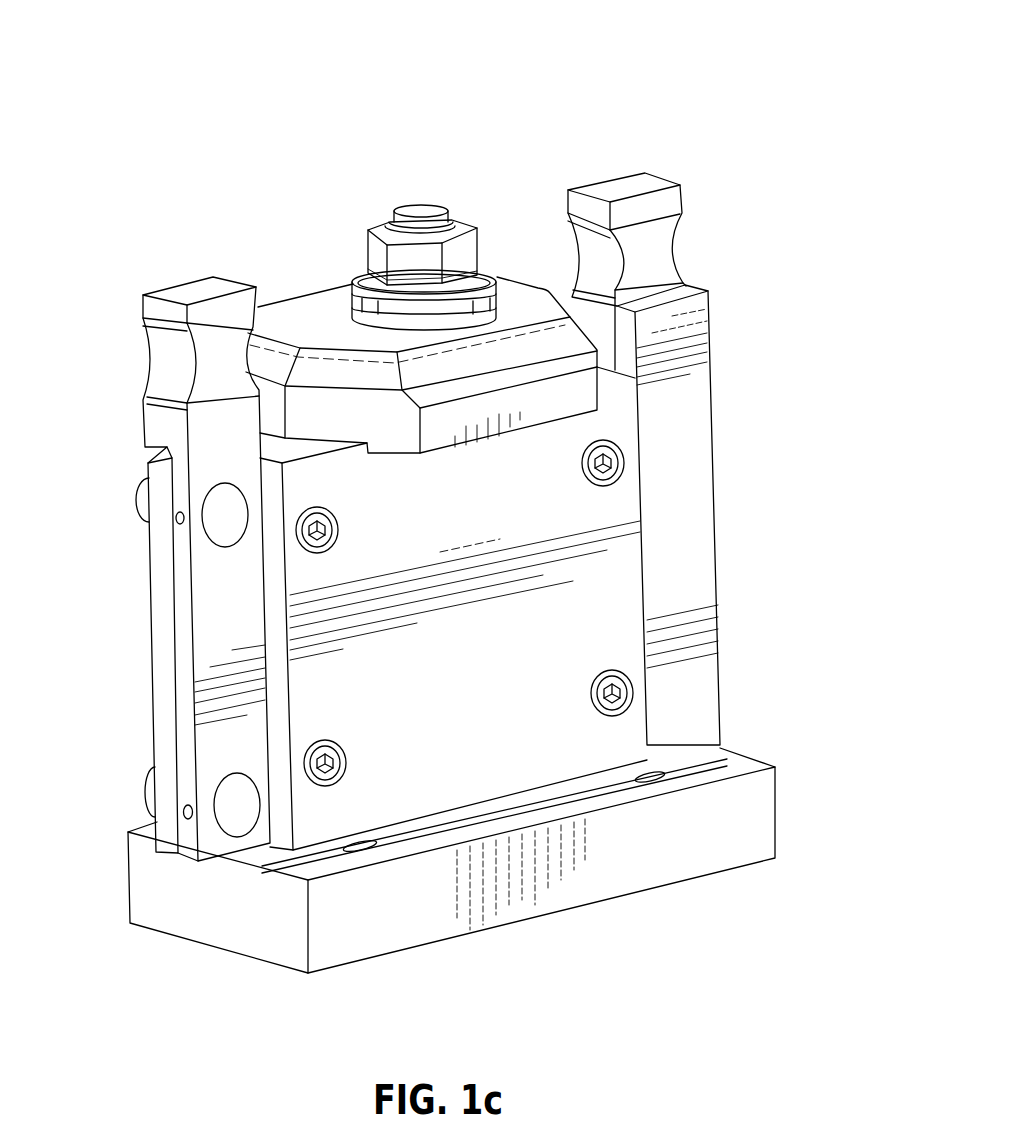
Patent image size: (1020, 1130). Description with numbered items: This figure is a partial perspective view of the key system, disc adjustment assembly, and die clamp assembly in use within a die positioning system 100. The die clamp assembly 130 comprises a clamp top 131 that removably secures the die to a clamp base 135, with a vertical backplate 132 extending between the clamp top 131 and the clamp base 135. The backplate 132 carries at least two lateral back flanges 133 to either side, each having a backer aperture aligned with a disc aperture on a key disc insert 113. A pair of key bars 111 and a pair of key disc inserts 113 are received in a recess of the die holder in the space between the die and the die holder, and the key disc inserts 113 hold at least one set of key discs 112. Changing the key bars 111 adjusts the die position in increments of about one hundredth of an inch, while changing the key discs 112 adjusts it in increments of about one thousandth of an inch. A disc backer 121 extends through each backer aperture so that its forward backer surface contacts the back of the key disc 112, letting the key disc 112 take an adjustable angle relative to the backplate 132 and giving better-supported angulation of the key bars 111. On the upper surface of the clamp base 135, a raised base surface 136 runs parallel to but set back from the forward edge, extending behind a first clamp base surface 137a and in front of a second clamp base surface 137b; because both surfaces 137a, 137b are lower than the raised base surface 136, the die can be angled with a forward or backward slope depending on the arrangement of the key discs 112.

The die positioning system 100 is at (760, 210).
The key bar 111 is at (703, 550).
The key disc 112 is at (232, 782).
The key disc insert 113 is at (173, 370).
The disc backer 121 is at (143, 487).
The die clamp assembly 130 is at (572, 97).
The clamp top 131 is at (306, 312).
The backplate 132 is at (625, 500).
The back flange 133 is at (150, 597).
The clamp base 135 is at (347, 937).
The raised base surface 136 is at (557, 797).
The first clamp base surface 137a is at (607, 798).
The second clamp base surface 137b is at (273, 855).